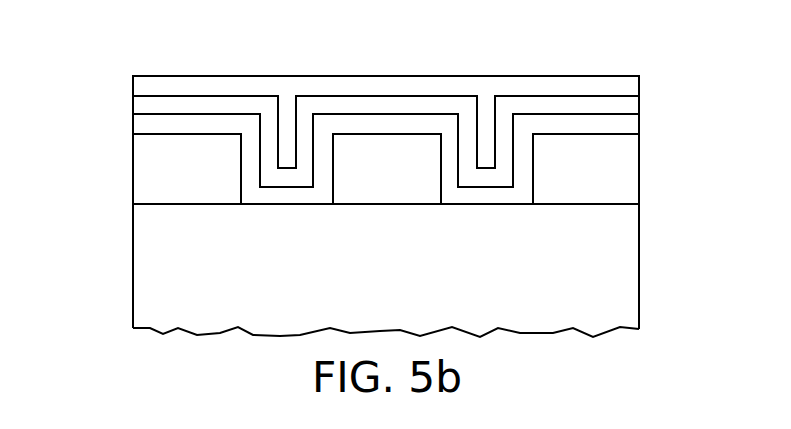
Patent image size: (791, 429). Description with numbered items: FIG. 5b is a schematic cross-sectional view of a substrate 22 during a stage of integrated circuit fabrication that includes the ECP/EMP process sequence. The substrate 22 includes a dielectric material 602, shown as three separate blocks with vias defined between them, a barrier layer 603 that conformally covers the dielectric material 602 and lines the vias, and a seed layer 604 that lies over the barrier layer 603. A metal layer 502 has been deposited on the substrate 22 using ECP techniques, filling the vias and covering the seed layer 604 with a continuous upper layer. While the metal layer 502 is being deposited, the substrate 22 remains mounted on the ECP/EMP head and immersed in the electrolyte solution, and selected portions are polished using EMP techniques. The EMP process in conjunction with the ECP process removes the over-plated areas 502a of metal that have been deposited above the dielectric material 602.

The substrate 22 is at (399, 279).
The dielectric material 602 is at (203, 184).
The barrier layer 603 is at (145, 124).
The seed layer 604 is at (138, 105).
The metal layer 502 is at (137, 85).
The over-plated areas 502a is at (593, 87).